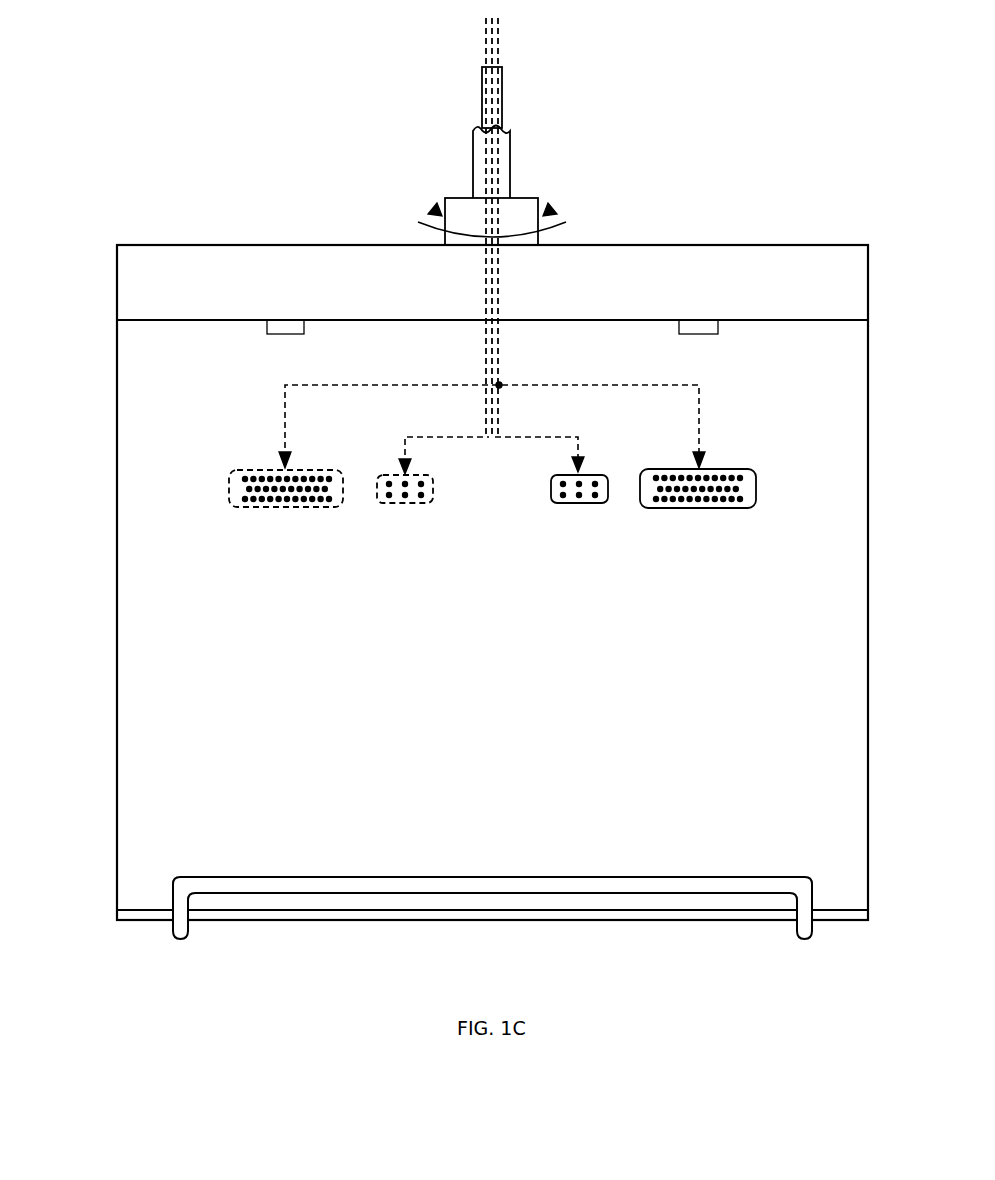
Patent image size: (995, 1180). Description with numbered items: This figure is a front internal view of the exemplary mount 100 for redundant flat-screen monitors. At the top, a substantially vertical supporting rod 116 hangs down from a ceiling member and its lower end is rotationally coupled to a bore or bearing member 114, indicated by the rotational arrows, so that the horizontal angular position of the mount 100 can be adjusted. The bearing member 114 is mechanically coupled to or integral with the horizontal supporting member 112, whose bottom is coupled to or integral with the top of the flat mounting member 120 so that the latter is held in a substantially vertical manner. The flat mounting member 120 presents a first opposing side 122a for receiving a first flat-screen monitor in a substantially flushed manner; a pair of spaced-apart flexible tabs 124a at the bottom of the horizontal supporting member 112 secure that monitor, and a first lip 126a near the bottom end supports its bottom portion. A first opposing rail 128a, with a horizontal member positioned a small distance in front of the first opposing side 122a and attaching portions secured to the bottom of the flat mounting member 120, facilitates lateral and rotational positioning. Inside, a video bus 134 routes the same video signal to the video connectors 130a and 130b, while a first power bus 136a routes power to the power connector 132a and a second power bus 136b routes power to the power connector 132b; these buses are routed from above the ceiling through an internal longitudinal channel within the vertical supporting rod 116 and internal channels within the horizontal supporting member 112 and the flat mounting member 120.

The mount 100 is at (319, 108).
The horizontal supporting member 112 is at (250, 280).
The bearing member 114 is at (520, 213).
The vertical supporting rod 116 is at (478, 160).
The flat mounting member 120 is at (117, 425).
The first opposing side 122a is at (518, 632).
The flexible tabs 124a is at (286, 336).
The first lip 126a is at (135, 910).
The first opposing rail 128a is at (465, 876).
The video connector 130a is at (698, 510).
The video connector 130b is at (284, 509).
The power connector 132a is at (580, 505).
The power connector 132b is at (402, 505).
The video bus 134 is at (492, 417).
The first power bus 136a is at (550, 446).
The second power bus 136b is at (423, 447).